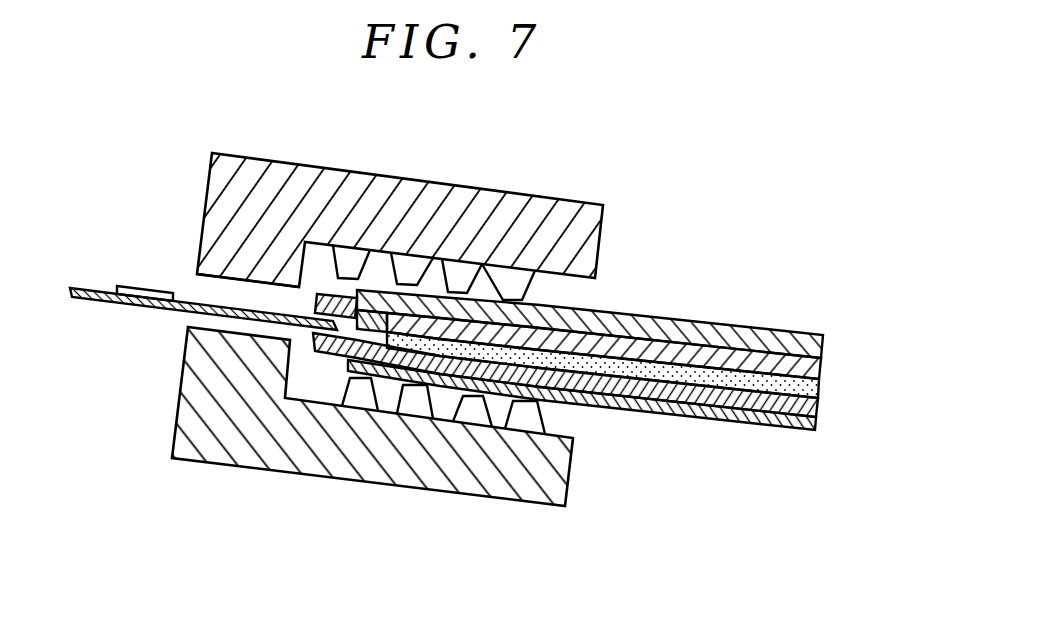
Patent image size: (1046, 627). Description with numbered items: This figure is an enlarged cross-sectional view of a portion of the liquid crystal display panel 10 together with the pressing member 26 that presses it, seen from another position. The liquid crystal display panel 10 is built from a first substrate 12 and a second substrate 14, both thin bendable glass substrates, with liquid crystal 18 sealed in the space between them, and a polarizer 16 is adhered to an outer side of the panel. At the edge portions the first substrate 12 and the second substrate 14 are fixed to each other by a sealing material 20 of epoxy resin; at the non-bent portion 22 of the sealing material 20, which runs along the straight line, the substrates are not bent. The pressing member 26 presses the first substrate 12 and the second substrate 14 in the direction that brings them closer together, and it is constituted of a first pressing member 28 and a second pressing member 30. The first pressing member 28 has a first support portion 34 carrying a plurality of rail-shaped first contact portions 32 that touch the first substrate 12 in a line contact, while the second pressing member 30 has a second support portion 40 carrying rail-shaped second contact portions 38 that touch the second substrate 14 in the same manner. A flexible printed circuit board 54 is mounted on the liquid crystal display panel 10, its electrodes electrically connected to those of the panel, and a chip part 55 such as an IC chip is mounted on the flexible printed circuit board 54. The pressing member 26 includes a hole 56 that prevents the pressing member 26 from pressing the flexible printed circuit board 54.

The liquid crystal display panel 10 is at (599, 387).
The first substrate 12 is at (708, 323).
The second substrate 14 is at (691, 398).
The polarizer 16 is at (767, 332).
The liquid crystal 18 is at (823, 386).
The sealing material 20 is at (336, 330).
The non-bent portion 22 is at (358, 322).
The pressing member 26 is at (411, 200).
The first pressing member 28 is at (457, 190).
The second pressing member 30 is at (372, 453).
The first contact portion 32 is at (519, 280).
The first support portion 34 is at (398, 185).
The second contact portion 38 is at (527, 421).
The second support portion 40 is at (426, 478).
The flexible printed circuit board 54 is at (150, 309).
The chip part 55 is at (140, 286).
The hole 56 is at (203, 290).